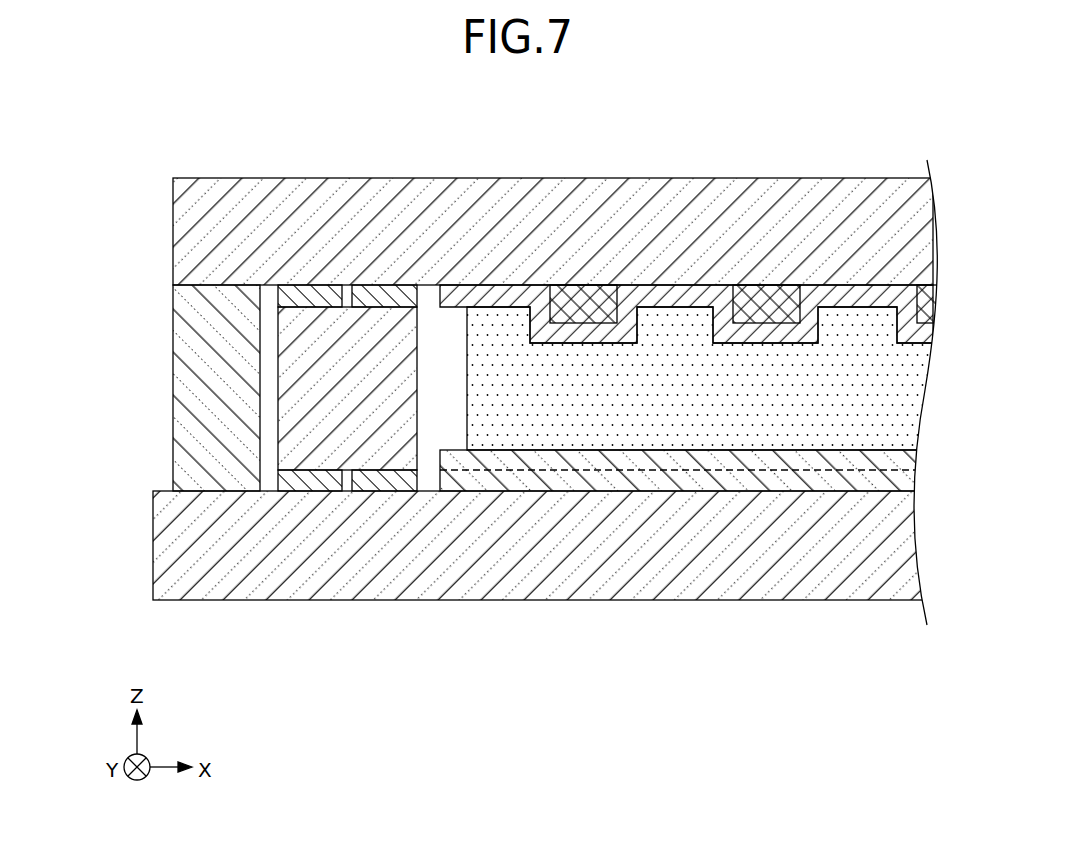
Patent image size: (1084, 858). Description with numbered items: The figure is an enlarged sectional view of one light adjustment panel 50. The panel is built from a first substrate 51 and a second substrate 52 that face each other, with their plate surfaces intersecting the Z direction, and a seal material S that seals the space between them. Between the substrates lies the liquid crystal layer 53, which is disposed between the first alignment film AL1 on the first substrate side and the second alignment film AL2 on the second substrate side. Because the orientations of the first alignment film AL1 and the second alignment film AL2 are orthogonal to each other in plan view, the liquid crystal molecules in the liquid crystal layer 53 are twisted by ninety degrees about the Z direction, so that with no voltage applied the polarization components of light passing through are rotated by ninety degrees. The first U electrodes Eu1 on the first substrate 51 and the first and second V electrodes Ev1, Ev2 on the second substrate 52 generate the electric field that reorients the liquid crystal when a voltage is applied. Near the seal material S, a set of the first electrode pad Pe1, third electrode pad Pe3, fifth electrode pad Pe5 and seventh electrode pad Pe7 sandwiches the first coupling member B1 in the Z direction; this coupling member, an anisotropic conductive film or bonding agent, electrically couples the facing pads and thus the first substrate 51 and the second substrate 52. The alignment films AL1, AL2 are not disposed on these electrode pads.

The light adjustment panel 50 is at (502, 393).
The first substrate 51 is at (195, 600).
The second substrate 52 is at (247, 178).
The liquid crystal layer 53 is at (778, 406).
The seal material S is at (173, 388).
The first coupling member B1 is at (278, 432).
The first electrode pad Pe1 is at (388, 491).
The third electrode pad Pe3 is at (308, 491).
The fifth electrode pad Pe5 is at (390, 290).
The seventh electrode pad Pe7 is at (314, 290).
The first alignment film AL1 is at (812, 451).
The second alignment film AL2 is at (545, 345).
The first V electrode Ev1 is at (583, 300).
The second V electrode Ev2 is at (772, 300).
The first U electrode Eu1 is at (632, 470).